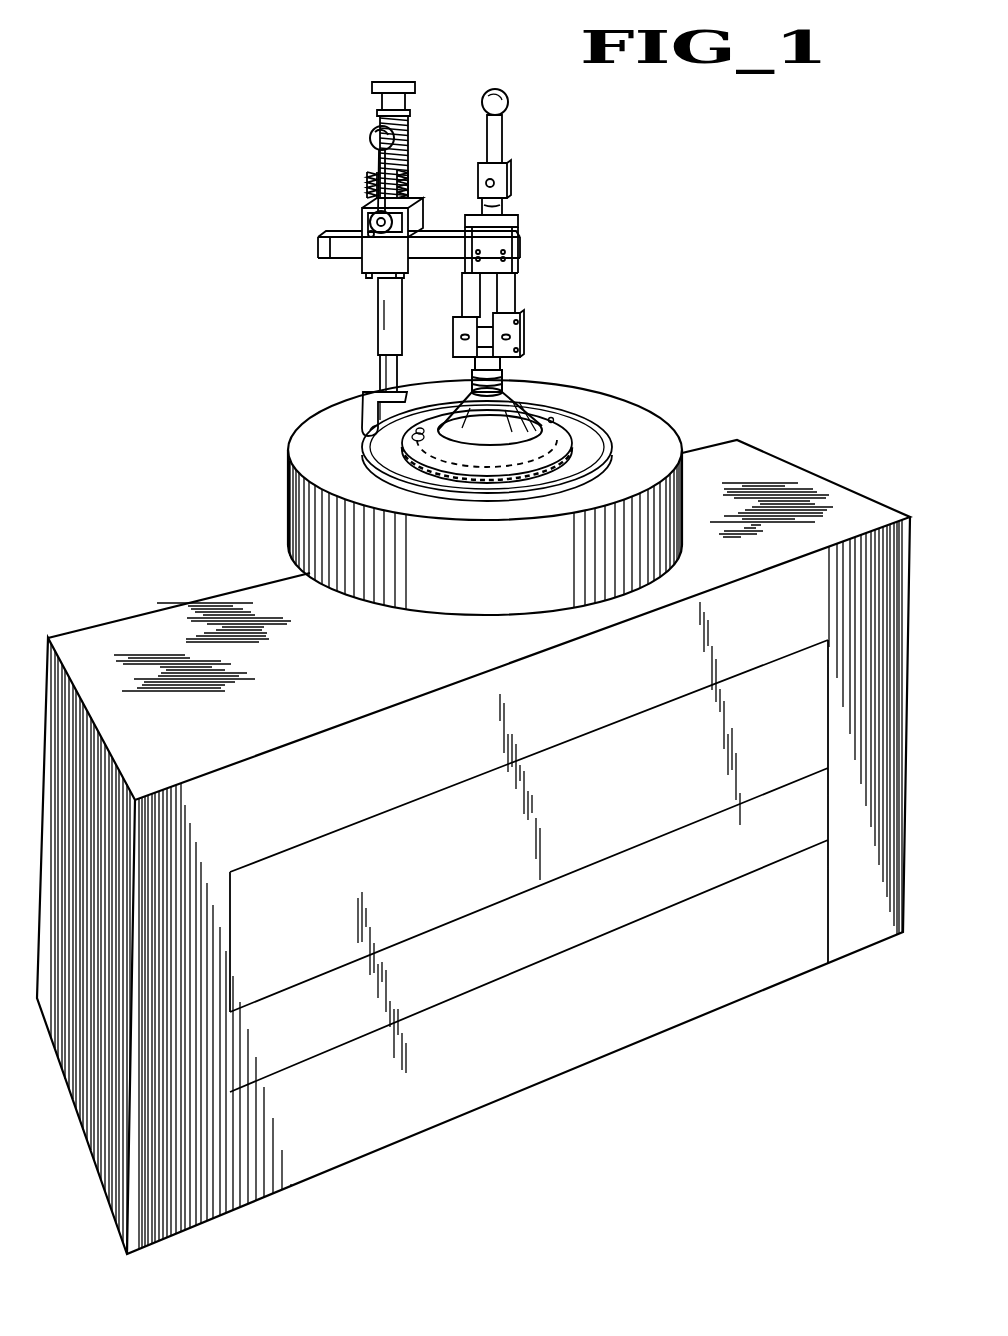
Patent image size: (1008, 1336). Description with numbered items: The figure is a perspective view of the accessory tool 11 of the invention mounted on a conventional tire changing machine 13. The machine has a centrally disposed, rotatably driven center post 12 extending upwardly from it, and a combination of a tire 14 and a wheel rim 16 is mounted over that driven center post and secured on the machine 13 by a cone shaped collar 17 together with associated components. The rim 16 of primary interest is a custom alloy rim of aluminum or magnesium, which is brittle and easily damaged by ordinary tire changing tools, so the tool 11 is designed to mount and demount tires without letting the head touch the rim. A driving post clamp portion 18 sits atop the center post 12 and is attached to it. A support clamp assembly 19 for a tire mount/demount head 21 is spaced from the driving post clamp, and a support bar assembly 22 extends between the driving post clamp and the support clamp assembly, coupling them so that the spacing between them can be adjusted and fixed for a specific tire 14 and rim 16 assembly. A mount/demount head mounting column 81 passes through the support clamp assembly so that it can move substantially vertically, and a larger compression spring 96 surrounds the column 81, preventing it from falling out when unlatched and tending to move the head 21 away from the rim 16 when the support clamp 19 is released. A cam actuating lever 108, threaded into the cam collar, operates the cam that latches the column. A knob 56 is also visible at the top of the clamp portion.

The accessory tool 11 is at (523, 187).
The center post 12 is at (500, 380).
The tire changing machine 13 is at (236, 580).
The tire 14 is at (653, 422).
The wheel rim 16 is at (585, 420).
The cone shaped collar 17 is at (450, 397).
The driving post clamp portion 18 is at (518, 248).
The support clamp assembly 19 is at (360, 202).
The tire mount/demount head 21 is at (362, 398).
The support bar assembly 22 is at (333, 260).
The knob 56 is at (498, 127).
The mount/demount head mounting column 81 is at (377, 322).
The compression spring 96 is at (408, 143).
The cam actuating lever 108 is at (378, 160).